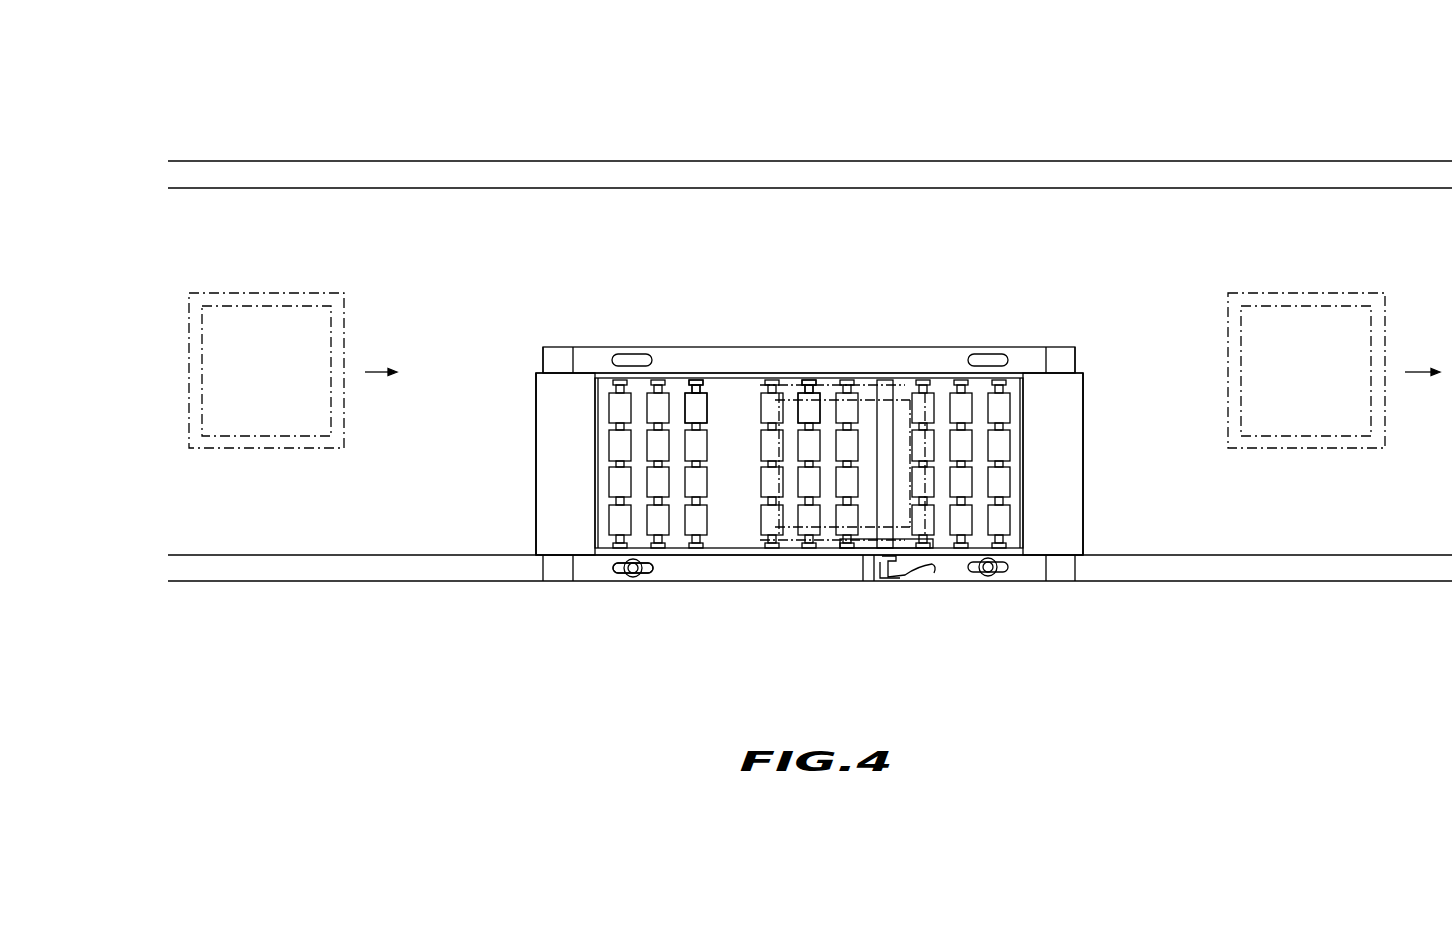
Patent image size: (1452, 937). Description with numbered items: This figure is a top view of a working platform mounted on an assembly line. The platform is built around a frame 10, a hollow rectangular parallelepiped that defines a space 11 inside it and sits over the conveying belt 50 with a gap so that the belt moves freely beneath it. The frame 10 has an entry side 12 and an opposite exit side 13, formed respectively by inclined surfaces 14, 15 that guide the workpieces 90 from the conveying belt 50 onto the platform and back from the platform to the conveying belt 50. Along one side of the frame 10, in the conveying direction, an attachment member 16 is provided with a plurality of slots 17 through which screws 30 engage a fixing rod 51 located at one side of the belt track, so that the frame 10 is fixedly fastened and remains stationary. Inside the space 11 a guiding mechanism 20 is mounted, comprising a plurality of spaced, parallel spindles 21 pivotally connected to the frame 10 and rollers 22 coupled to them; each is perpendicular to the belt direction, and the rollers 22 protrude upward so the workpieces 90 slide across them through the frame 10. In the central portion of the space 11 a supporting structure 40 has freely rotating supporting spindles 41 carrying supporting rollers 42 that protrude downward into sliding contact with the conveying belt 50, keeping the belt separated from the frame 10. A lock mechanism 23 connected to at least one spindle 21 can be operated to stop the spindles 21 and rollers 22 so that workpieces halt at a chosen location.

The conveying belt 50 is at (650, 130).
The fixing rod 51 is at (432, 568).
The workpiece 90 is at (310, 322).
The frame 10 is at (981, 312).
The space 11 is at (740, 540).
The entry side 12 is at (537, 462).
The exit side 13 is at (1085, 462).
The inclined surface 14 is at (560, 476).
The inclined surface 15 is at (1060, 476).
The attachment member 16 is at (778, 565).
The slot 17 is at (647, 574).
The screw 30 is at (630, 578).
The guiding mechanism 20 is at (708, 388).
The spindle 21 is at (692, 378).
The roller 22 is at (690, 408).
The supporting structure 40 is at (823, 388).
The supporting spindle 41 is at (806, 378).
The supporting roller 42 is at (805, 408).
The lock mechanism 23 is at (908, 580).